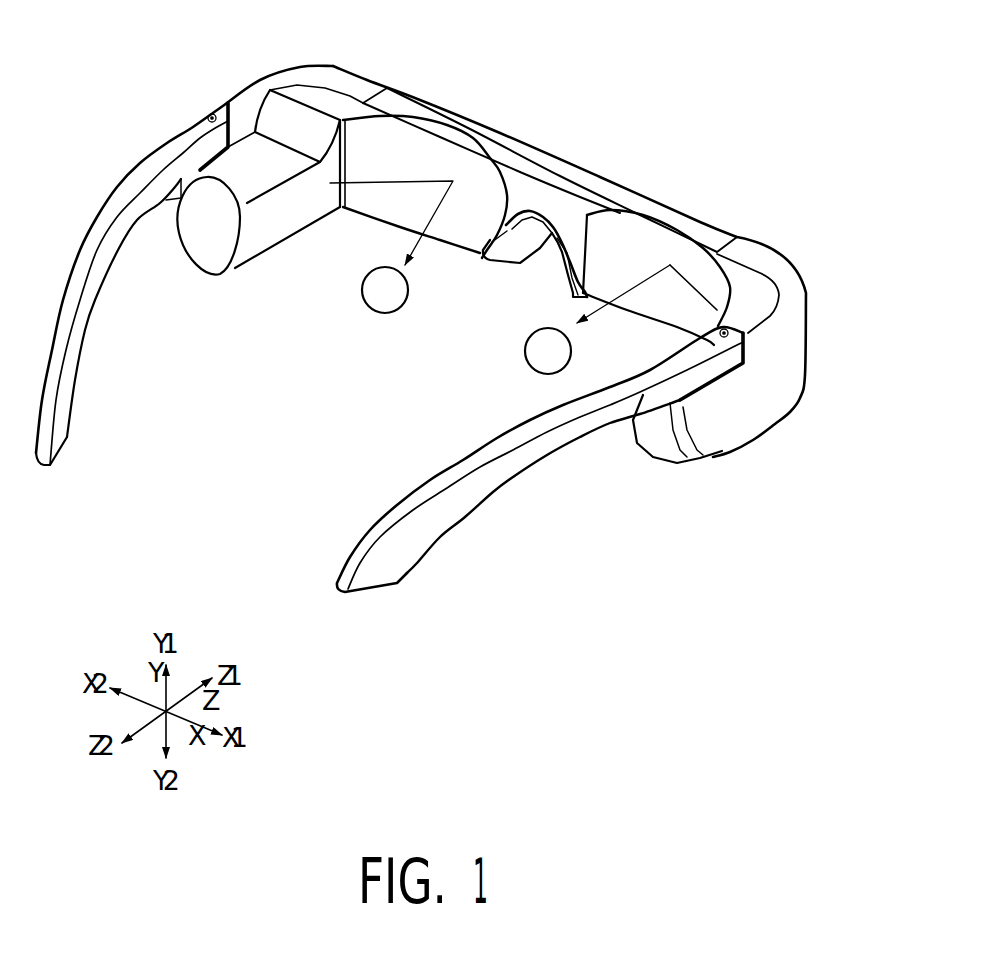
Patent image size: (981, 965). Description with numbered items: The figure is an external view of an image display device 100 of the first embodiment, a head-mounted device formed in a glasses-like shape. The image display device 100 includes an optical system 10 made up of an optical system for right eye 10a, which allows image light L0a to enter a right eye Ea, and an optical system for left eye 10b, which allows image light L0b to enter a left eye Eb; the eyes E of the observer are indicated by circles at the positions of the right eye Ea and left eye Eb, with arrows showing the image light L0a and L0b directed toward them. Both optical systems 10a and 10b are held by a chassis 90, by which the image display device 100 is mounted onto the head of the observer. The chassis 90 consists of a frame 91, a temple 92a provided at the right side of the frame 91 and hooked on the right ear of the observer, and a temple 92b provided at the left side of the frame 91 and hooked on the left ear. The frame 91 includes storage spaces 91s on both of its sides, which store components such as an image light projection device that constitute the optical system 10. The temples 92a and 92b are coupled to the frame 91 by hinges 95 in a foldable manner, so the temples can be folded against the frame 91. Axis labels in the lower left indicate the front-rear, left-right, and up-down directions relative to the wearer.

The image display device 100 is at (672, 100).
The chassis 90 is at (128, 173).
The frame 91 is at (538, 150).
The temple 92a is at (655, 425).
The temple 92b is at (190, 127).
The storage space 91s is at (192, 238).
The hinge 95 is at (210, 113).
The optical system 10 is at (453, 257).
The optical system for right eye 10a is at (620, 360).
The optical system for left eye 10b is at (320, 240).
The image light L0a is at (623, 288).
The image light L0b is at (391, 208).
The eye E is at (421, 320).
The right eye Ea is at (530, 340).
The left eye Eb is at (372, 297).